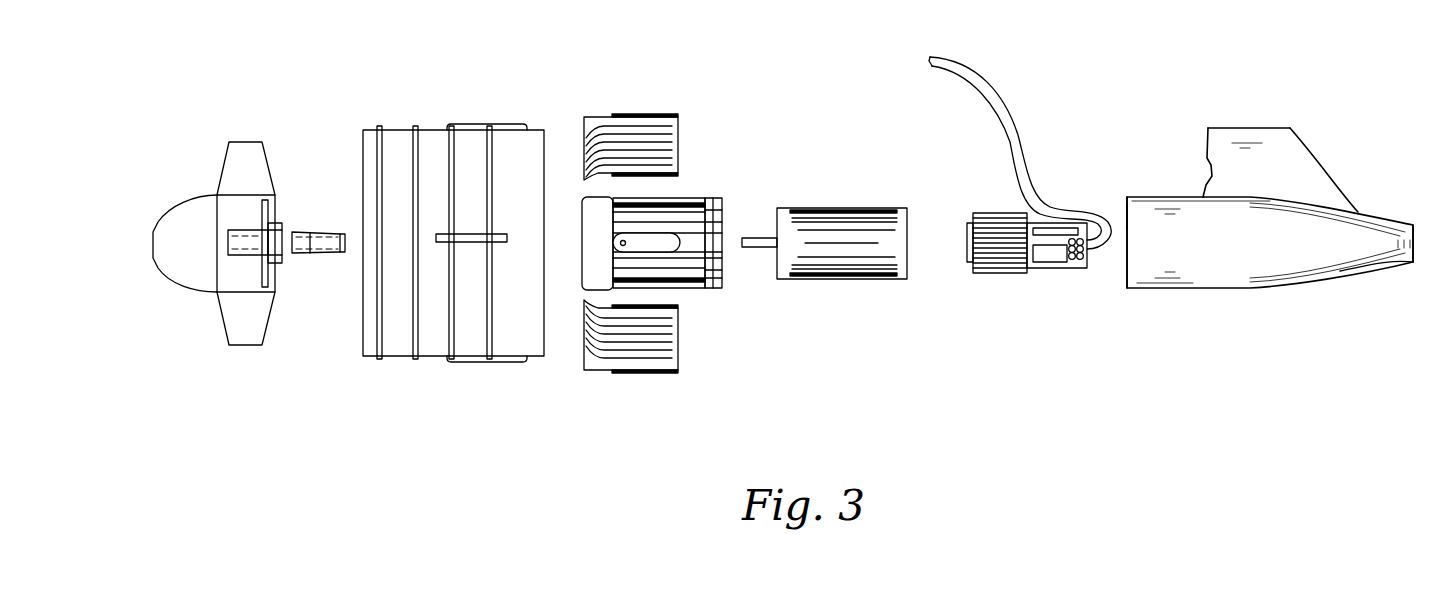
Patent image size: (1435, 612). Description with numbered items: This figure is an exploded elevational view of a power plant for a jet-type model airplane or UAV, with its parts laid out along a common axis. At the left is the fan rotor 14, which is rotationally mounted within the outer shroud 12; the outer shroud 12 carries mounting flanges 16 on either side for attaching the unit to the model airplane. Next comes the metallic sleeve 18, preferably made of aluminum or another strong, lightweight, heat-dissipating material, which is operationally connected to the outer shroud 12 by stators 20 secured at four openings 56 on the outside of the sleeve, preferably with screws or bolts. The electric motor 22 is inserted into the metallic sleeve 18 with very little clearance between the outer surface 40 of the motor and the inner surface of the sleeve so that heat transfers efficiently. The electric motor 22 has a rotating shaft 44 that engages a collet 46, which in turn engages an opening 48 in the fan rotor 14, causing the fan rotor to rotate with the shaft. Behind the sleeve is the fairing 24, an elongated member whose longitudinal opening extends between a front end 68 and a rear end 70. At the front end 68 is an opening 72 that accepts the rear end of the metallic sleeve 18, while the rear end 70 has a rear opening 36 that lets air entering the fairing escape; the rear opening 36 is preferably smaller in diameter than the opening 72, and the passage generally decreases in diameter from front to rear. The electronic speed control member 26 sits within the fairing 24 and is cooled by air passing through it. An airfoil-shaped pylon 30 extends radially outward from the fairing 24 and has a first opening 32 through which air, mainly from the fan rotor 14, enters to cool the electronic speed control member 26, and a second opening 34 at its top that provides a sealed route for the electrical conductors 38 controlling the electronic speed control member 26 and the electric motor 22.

The outer shroud 12 is at (380, 359).
The fan rotor 14 is at (186, 196).
The mounting flanges 16 is at (460, 243).
The metallic sleeve 18 is at (690, 290).
The stators 20 is at (640, 114).
The electric motor 22 is at (828, 208).
The fairing 24 is at (1270, 290).
The electronic speed control member 26 is at (1010, 275).
The airfoil-shaped pylon 30 is at (1318, 167).
The first opening 32 is at (1207, 170).
The second opening 34 is at (1257, 128).
The rear opening 36 is at (1415, 228).
The electrical conductors 38 is at (1025, 142).
The outer surface of the electric motor 40 is at (845, 279).
The rotating shaft 44 is at (760, 238).
The collet 46 is at (318, 233).
The opening in the fan rotor 48 is at (279, 265).
The openings 56 is at (625, 242).
The front end 68 is at (1127, 290).
The rear end 70 is at (1398, 272).
The opening 72 is at (1120, 215).